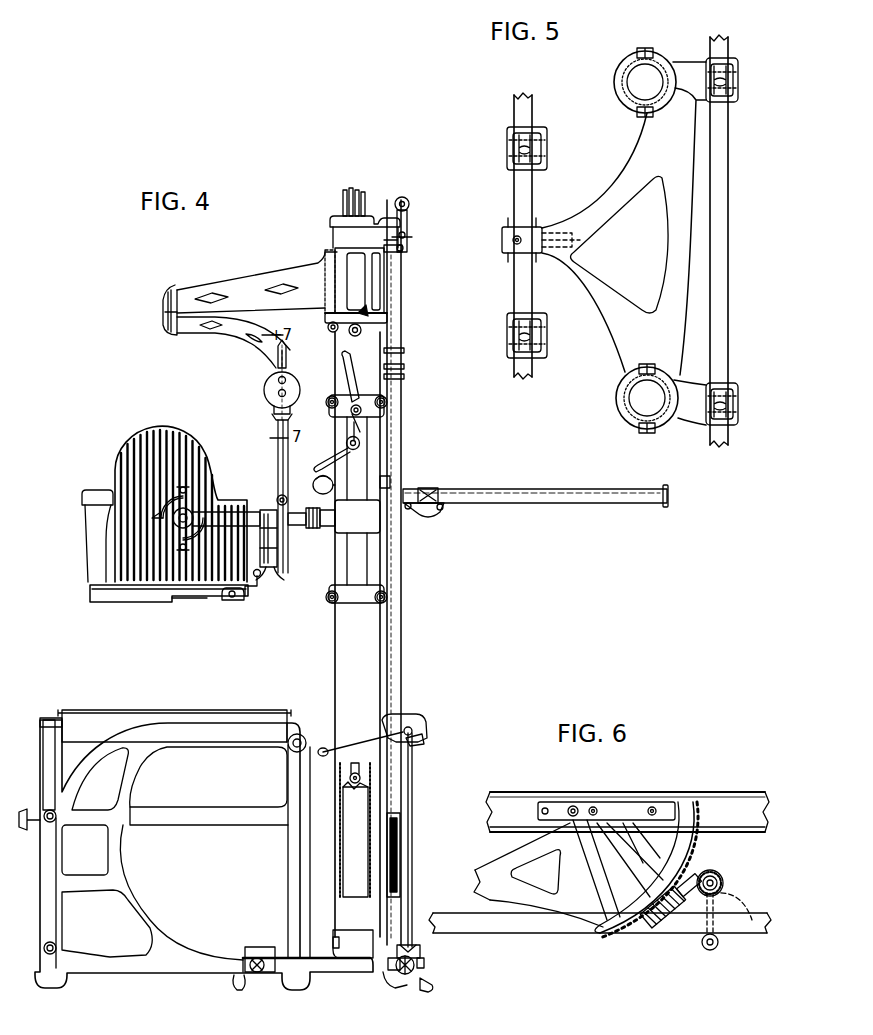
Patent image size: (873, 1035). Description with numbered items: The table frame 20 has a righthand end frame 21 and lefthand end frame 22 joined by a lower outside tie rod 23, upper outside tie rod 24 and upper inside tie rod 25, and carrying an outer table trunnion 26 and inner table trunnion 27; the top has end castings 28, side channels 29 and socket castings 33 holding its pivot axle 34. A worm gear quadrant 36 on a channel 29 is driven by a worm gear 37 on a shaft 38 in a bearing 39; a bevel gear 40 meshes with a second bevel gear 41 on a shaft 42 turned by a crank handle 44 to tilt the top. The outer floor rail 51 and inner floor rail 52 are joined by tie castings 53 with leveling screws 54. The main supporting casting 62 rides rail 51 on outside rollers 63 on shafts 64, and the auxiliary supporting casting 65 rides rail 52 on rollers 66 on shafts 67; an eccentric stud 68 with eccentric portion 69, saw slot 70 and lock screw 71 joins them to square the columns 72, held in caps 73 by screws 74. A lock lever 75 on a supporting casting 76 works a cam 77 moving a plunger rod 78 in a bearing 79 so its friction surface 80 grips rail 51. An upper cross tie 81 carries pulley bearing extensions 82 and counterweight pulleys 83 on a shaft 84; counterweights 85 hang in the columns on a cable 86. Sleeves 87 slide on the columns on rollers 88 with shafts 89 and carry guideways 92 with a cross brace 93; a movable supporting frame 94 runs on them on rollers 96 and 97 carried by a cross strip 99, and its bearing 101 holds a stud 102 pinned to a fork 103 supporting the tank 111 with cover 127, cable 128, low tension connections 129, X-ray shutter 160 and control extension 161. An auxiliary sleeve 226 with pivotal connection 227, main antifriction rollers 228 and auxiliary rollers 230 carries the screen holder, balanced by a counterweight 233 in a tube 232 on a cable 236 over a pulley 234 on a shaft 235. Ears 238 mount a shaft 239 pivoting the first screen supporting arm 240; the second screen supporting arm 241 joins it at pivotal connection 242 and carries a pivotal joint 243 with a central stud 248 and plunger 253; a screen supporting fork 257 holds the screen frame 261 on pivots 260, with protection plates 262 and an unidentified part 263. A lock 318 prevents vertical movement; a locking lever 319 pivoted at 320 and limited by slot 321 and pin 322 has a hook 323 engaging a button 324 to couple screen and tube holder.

In FIG. 4, the table frame 20 is at (118, 976).
In FIG. 4, the righthand end frame 21 is at (48, 893).
In FIG. 4, the lefthand end frame 22 is at (288, 882).
In FIG. 4, the lower outside tie rod 23 is at (45, 944).
In FIG. 4, the upper outside tie rod 24 is at (44, 826).
In FIG. 4, the upper inside tie rod 25 is at (301, 735).
In FIG. 4, the outer table trunnion 26 is at (44, 730).
In FIG. 6, the outer table trunnion 26 is at (498, 858).
In FIG. 4, the inner table trunnion 27 is at (290, 718).
In FIG. 4, the end castings 28 is at (78, 714).
In FIG. 6, the side channels 29 is at (496, 810).
In FIG. 6, the socket castings 33 is at (595, 806).
In FIG. 6, the axle 34 is at (568, 806).
In FIG. 6, the worm gear quadrant 36 is at (700, 806).
In FIG. 6, the worm gear 37 is at (650, 922).
In FIG. 6, the shaft 38 is at (686, 915).
In FIG. 6, the bearing 39 is at (706, 942).
In FIG. 6, the bevel gear 40 is at (702, 876).
In FIG. 6, the second bevel gear 41 is at (718, 876).
In FIG. 6, the shaft 42 is at (723, 879).
In FIG. 6, the crank handle 44 is at (738, 900).
In FIG. 4, the outer floor rail 51 is at (405, 975).
In FIG. 5, the outer floor rail 51 is at (729, 250).
In FIG. 4, the inner floor rail 52 is at (258, 975).
In FIG. 5, the inner floor rail 52 is at (513, 185).
In FIG. 4, the tie castings 53 is at (394, 972).
In FIG. 4, the leveling screw 54 is at (428, 990).
In FIG. 4, the main tube stand supporting casting 62 is at (383, 975).
In FIG. 5, the main tube stand supporting casting 62 is at (652, 158).
In FIG. 5, the outside rollers 63 is at (730, 58).
In FIG. 5, the shafts 64 is at (739, 74).
In FIG. 5, the auxiliary tube stand supporting casting 65 is at (514, 274).
In FIG. 5, the rollers 66 is at (514, 122).
In FIG. 5, the shafts 67 is at (508, 145).
In FIG. 5, the stud 68 is at (510, 256).
In FIG. 5, the eccentric portion 69 is at (558, 232).
In FIG. 5, the saw slot 70 is at (500, 240).
In FIG. 5, the lock screw 71 is at (515, 236).
In FIG. 4, the tube stand columns 72 is at (394, 348).
In FIG. 5, the tube stand columns 72 is at (652, 58).
In FIG. 4, the caps 73 is at (344, 960).
In FIG. 5, the caps 73 is at (621, 72).
In FIG. 4, the screws 74 is at (335, 940).
In FIG. 5, the screws 74 is at (638, 54).
In FIG. 4, the lock lever 75 is at (323, 756).
In FIG. 4, the supporting casting 76 is at (414, 716).
In FIG. 4, the cam 77 is at (426, 742).
In FIG. 4, the plunger rod 78 is at (413, 856).
In FIG. 4, the bearing 79 is at (406, 945).
In FIG. 4, the friction surface 80 is at (420, 957).
In FIG. 4, the upper cross tie 81 is at (334, 216).
In FIG. 4, the pulley bearing extensions 82 is at (364, 205).
In FIG. 4, the counterweight pulleys 83 is at (352, 189).
In FIG. 4, the shaft 84 is at (345, 191).
In FIG. 4, the counterweights 85 is at (348, 812).
In FIG. 4, the cable 86 is at (358, 191).
In FIG. 4, the sleeves 87 is at (348, 430).
In FIG. 4, the rollers 88 is at (330, 400).
In FIG. 4, the shafts 89 is at (330, 406).
In FIG. 4, the guideways 92 is at (548, 488).
In FIG. 4, the cross brace 93 is at (668, 490).
In FIG. 4, the movable supporting frame 94 is at (390, 481).
In FIG. 4, the rollers 96 is at (314, 483).
In FIG. 4, the rollers 97 is at (426, 514).
In FIG. 4, the cross strip 99 is at (442, 506).
In FIG. 4, the bearing 101 is at (328, 527).
In FIG. 4, the stud 102 is at (311, 529).
In FIG. 4, the fork 103 is at (297, 526).
In FIG. 4, the casing 111 is at (122, 455).
In FIG. 4, the cover 127 is at (207, 599).
In FIG. 4, the cable 128 is at (259, 580).
In FIG. 4, the low tension connections 129 is at (240, 600).
In FIG. 4, the X-ray shutter 160 is at (110, 603).
In FIG. 4, the control extension 161 is at (88, 560).
In FIG. 4, the auxiliary sleeve 226 is at (402, 252).
In FIG. 4, the pivotal connection 227 is at (370, 313).
In FIG. 4, the main antifriction rollers 228 is at (332, 250).
In FIG. 4, the auxiliary rollers 230 is at (402, 255).
In FIG. 4, the tube 232 is at (404, 366).
In FIG. 4, the counterweight 233 is at (400, 830).
In FIG. 4, the pulley 234 is at (402, 197).
In FIG. 4, the shaft 235 is at (407, 212).
In FIG. 4, the cable 236 is at (406, 234).
In FIG. 4, the ears 238 is at (336, 322).
In FIG. 4, the shaft 239 is at (325, 268).
In FIG. 4, the first screen supporting arm 240 is at (238, 284).
In FIG. 4, the second screen supporting arm 241 is at (213, 337).
In FIG. 4, the pivotal connection 242 is at (165, 312).
In FIG. 4, the pivotal joint 243 is at (278, 366).
In FIG. 4, the central stud 248 is at (272, 392).
In FIG. 4, the plunger 253 is at (345, 358).
In FIG. 4, the screen supporting fork 257 is at (277, 455).
In FIG. 4, the pivots 260 is at (278, 496).
In FIG. 4, the screen frame 261 is at (284, 580).
In FIG. 4, the protection plates 262 is at (268, 570).
In FIG. 4, the slide 263 is at (262, 512).
In FIG. 4, the lock 318 is at (360, 448).
In FIG. 4, the locking lever 319 is at (404, 377).
In FIG. 4, the pivot 320 is at (358, 434).
In FIG. 4, the slot 321 is at (362, 412).
In FIG. 4, the pin 322 is at (360, 422).
In FIG. 4, the hook 323 is at (404, 351).
In FIG. 4, the button 324 is at (361, 330).